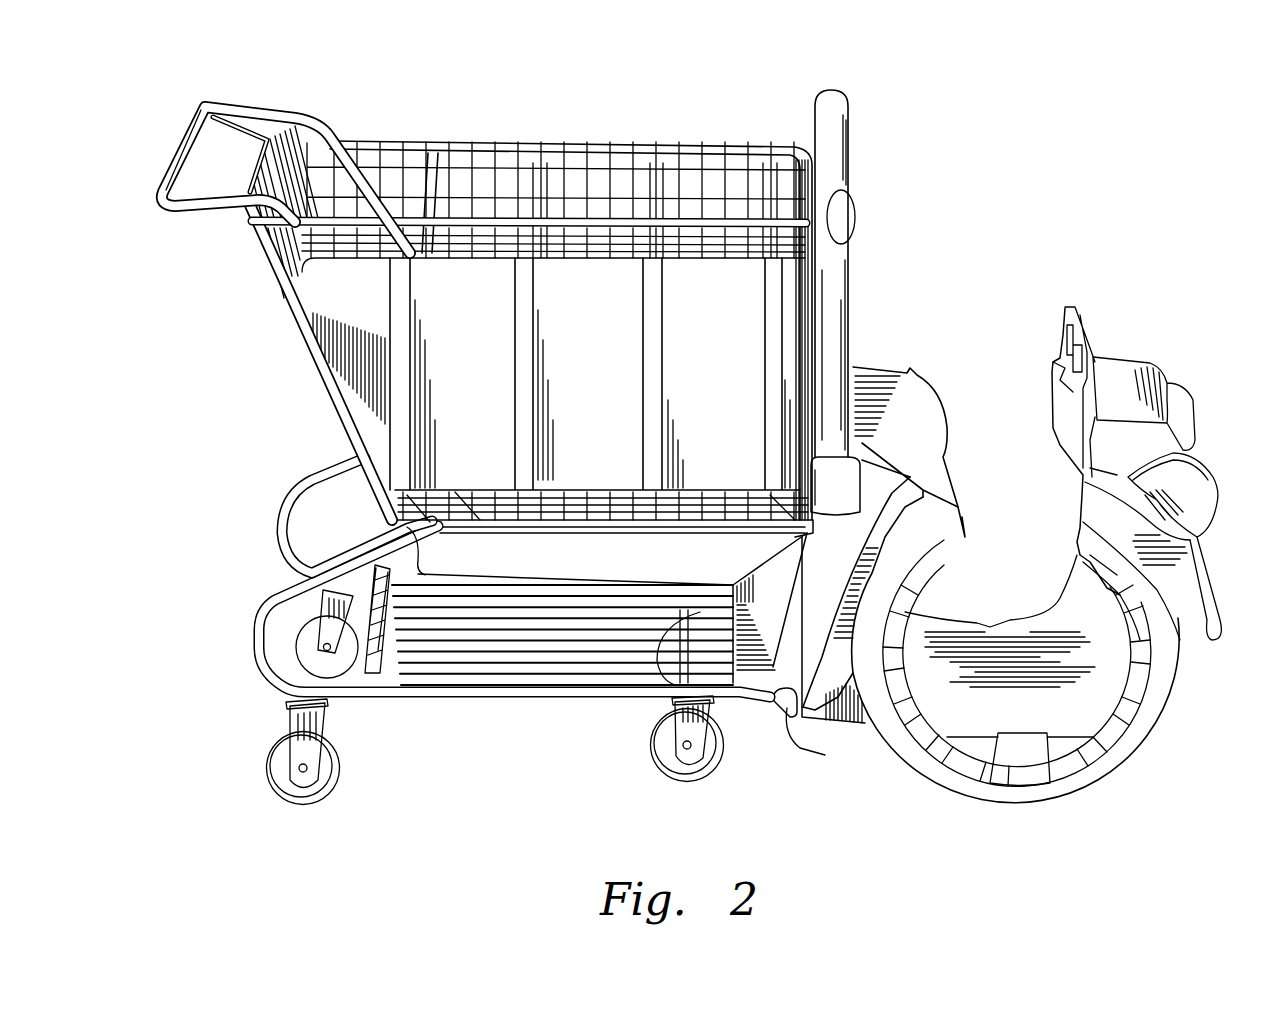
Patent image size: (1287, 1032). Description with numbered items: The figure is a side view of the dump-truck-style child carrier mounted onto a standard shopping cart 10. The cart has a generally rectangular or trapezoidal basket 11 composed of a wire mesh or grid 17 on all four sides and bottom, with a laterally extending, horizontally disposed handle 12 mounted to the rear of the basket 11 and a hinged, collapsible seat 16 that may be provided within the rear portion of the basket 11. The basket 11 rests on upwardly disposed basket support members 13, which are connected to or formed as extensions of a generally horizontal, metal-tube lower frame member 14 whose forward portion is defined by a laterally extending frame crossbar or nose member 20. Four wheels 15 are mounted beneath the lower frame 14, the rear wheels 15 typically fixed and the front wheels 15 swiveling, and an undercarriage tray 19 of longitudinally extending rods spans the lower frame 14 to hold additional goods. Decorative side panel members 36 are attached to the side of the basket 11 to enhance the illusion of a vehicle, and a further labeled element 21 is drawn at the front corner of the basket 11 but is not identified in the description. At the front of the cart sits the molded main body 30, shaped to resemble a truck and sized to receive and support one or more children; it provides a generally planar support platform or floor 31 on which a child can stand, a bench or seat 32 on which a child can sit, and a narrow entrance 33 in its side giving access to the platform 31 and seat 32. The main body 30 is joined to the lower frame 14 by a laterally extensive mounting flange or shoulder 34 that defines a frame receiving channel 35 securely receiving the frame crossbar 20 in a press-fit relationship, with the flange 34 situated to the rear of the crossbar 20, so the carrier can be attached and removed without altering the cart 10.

The shopping cart 10 is at (235, 352).
The basket 11 is at (531, 315).
The handle 12 is at (178, 133).
The basket support members 13 is at (445, 522).
The lower frame member 14 is at (551, 662).
The wheels 15 is at (338, 783).
The seat 16 is at (420, 203).
The wire mesh or grid 17 is at (737, 165).
The undercarriage tray 19 is at (487, 643).
The frame crossbar or nose member 20 is at (805, 720).
The post 21 is at (803, 170).
The main body 30 is at (1120, 370).
The support platform or floor 31 is at (962, 727).
The bench or seat 32 is at (945, 467).
The entrance 33 is at (1078, 710).
The mounting flange or shoulder 34 is at (773, 667).
The frame receiving channel 35 is at (787, 713).
The decorative side panel members 36 is at (606, 312).